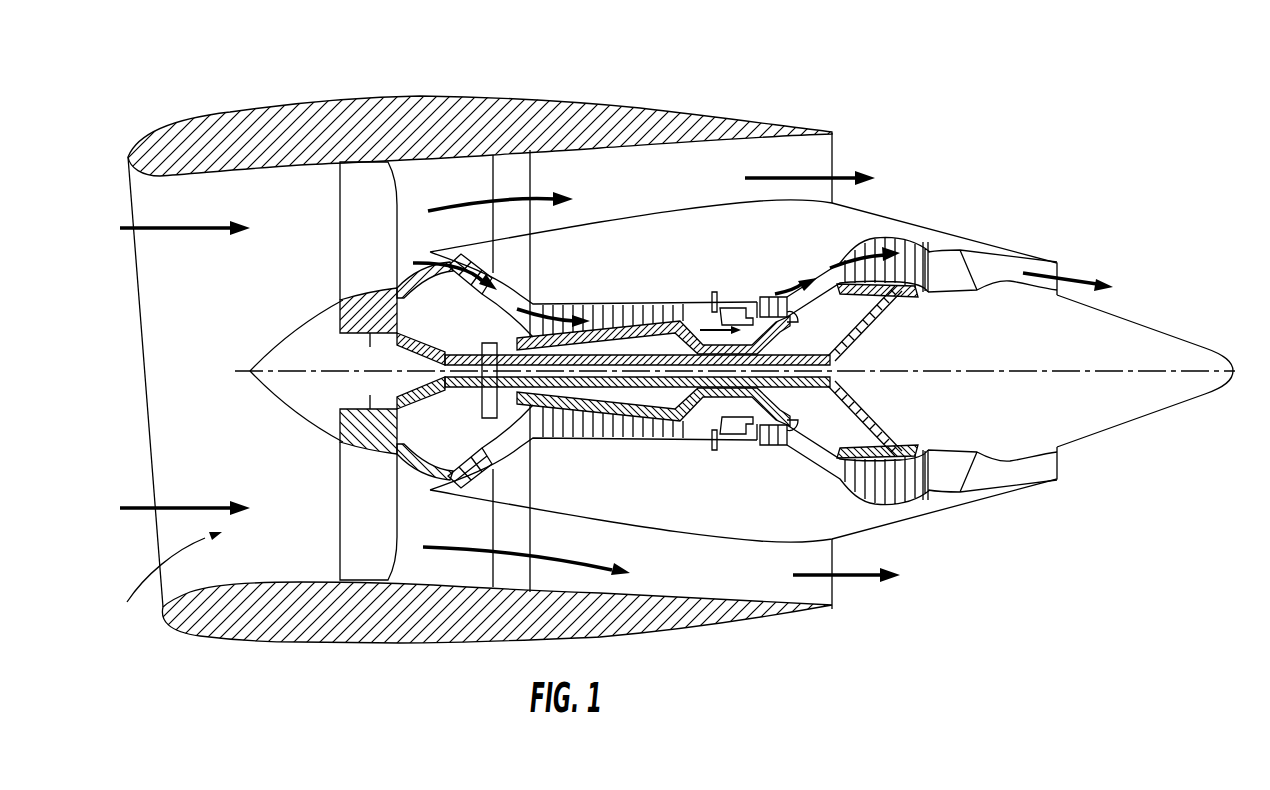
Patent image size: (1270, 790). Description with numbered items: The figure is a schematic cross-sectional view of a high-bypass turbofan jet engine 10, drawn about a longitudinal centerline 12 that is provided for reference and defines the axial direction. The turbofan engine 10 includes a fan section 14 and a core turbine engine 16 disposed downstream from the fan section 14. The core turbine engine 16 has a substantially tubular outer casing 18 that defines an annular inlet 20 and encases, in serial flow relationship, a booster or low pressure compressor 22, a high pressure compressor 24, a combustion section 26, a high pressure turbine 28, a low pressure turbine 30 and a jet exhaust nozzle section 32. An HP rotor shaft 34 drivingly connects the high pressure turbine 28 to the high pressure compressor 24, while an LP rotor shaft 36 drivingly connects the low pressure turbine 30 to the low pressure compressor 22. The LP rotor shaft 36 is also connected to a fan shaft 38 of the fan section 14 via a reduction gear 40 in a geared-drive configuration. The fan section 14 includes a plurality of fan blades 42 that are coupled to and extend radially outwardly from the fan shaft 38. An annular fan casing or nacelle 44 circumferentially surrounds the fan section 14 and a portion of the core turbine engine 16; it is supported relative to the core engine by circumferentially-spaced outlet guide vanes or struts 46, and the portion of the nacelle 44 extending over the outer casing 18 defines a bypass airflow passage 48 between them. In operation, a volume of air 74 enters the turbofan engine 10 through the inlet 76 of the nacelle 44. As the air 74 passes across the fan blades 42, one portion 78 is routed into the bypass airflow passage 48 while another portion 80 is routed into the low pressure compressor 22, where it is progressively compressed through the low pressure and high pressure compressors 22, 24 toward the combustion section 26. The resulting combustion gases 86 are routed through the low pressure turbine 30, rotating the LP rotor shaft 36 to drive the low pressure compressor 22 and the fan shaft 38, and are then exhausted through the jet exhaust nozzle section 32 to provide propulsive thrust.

The turbofan engine 10 is at (670, 349).
The longitudinal centerline 12 is at (1000, 370).
The fan section 14 is at (372, 318).
The core turbine engine 16 is at (793, 332).
The outer casing 18 is at (687, 538).
The annular inlet 20 is at (518, 403).
The low pressure compressor 22 is at (483, 445).
The high pressure compressor 24 is at (560, 428).
The combustion section 26 is at (733, 430).
The high pressure turbine 28 is at (796, 432).
The low pressure turbine 30 is at (915, 508).
The jet exhaust nozzle section 32 is at (980, 483).
The HP rotor shaft 34 is at (763, 343).
The LP rotor shaft 36 is at (875, 321).
The fan shaft 38 is at (397, 342).
The reduction gear 40 is at (486, 342).
The fan blades 42 is at (357, 197).
The nacelle 44 is at (341, 98).
The outlet guide vanes 46 is at (514, 182).
The bypass airflow passage 48 is at (655, 197).
The air 74 is at (160, 228).
The inlet 76 is at (163, 580).
The bypass air 78 is at (478, 200).
The core air 80 is at (430, 253).
The combustion gases 86 is at (773, 293).